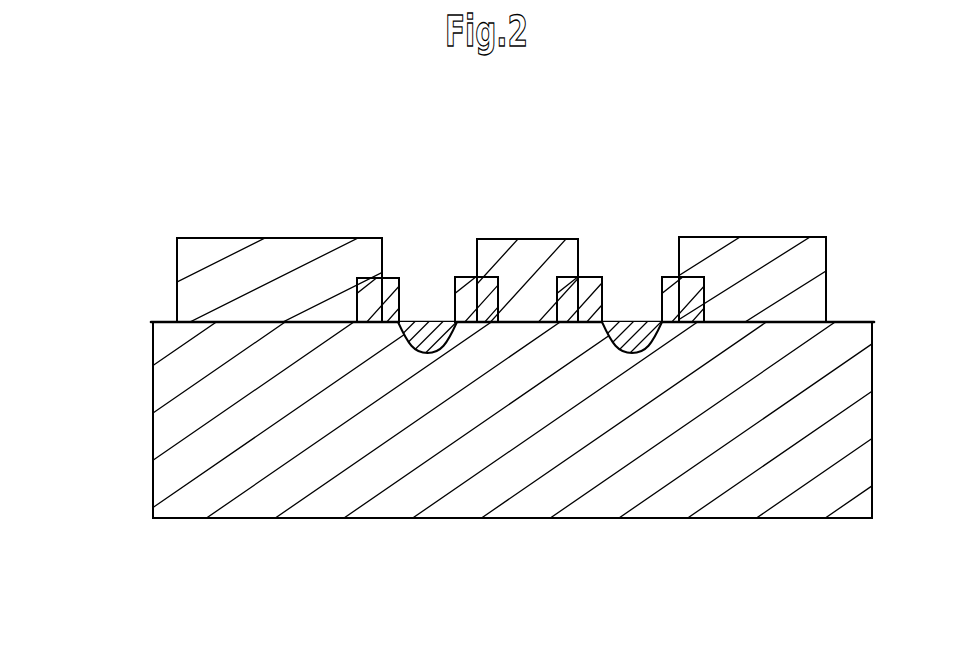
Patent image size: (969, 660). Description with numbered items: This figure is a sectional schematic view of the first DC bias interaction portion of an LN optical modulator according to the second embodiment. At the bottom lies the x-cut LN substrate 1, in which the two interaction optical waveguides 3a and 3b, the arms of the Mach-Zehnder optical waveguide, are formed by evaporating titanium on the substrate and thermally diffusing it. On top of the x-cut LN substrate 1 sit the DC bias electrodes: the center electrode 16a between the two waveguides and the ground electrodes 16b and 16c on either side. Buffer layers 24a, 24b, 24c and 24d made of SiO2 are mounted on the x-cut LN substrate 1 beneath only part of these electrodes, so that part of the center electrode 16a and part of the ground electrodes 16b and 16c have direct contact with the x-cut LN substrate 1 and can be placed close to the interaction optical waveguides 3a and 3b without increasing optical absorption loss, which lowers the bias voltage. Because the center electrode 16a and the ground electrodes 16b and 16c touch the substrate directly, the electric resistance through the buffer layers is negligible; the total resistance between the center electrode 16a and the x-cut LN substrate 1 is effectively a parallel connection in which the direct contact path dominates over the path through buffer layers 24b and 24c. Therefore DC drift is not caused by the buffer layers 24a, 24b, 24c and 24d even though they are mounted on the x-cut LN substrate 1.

The x-cut LN substrate 1 is at (152, 378).
The interaction optical waveguide (arm) 3a is at (427, 355).
The interaction optical waveguide (arm) 3b is at (630, 353).
The center electrode 16a is at (525, 238).
The ground electrode 16b is at (298, 238).
The ground electrode 16c is at (818, 239).
The buffer layer 24a is at (388, 277).
The buffer layer 24b is at (473, 277).
The buffer layer 24c is at (582, 277).
The buffer layer 24d is at (670, 277).